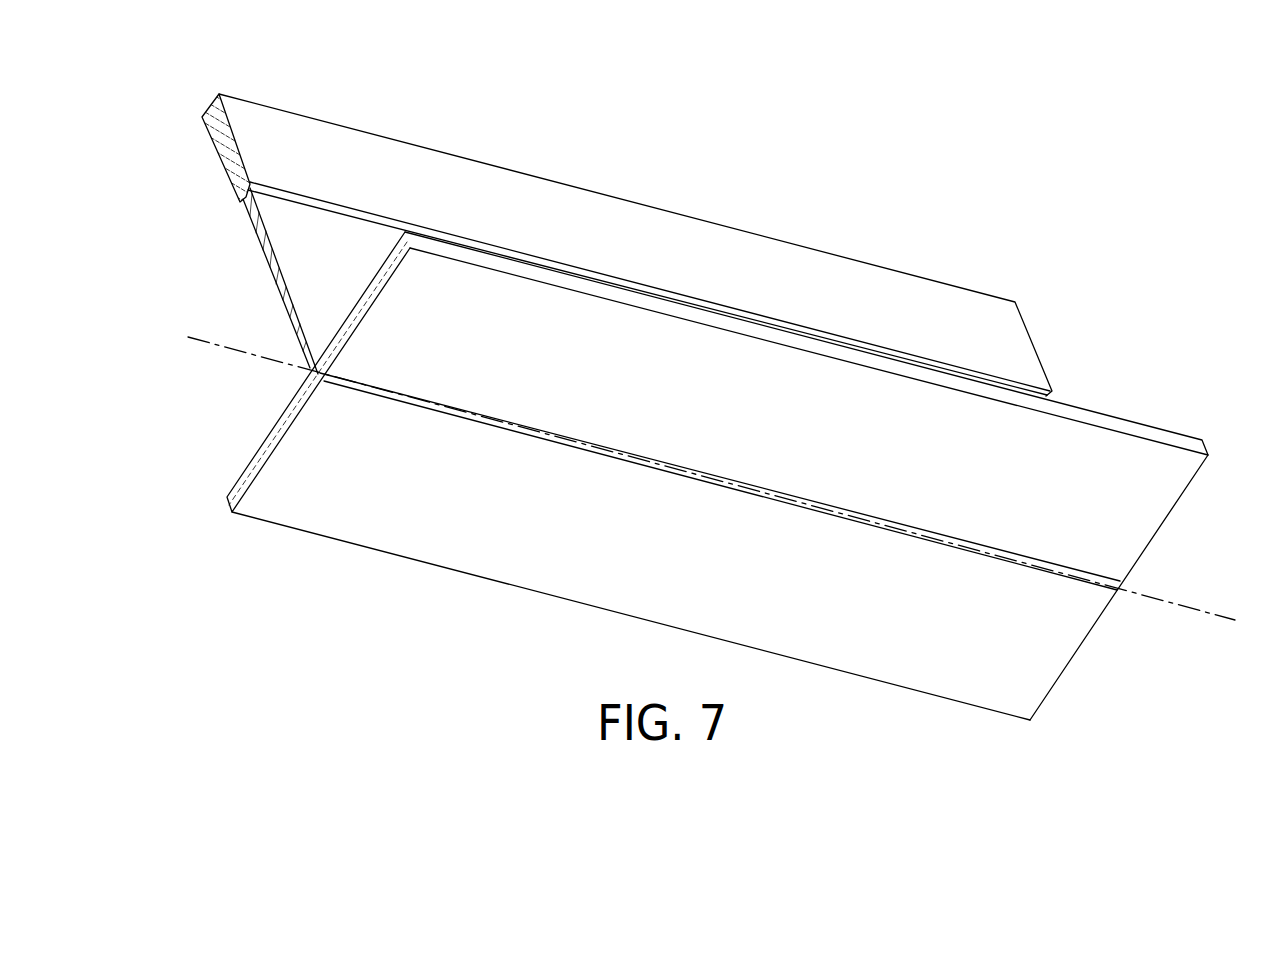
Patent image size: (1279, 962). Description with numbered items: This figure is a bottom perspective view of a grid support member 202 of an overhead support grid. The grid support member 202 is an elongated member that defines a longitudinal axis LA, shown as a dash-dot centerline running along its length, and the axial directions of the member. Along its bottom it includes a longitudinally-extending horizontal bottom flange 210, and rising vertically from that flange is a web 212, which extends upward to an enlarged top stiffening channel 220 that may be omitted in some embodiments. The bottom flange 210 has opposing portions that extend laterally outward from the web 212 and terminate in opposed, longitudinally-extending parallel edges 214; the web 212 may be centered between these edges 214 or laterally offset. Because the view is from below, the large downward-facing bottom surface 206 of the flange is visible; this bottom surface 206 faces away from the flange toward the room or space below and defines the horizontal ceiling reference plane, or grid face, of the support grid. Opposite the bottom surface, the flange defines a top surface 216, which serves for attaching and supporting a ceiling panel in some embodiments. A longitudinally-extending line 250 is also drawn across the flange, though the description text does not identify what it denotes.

The grid support member 202 is at (125, 109).
The bottom surface 206 is at (384, 495).
The bottom flange 210 is at (1113, 404).
The web 212 is at (278, 287).
The edges 214 is at (622, 298).
The top surface 216 is at (249, 454).
The top stiffening channel 220 is at (861, 286).
The fold line 250 is at (726, 485).
The longitudinal axis LA is at (1226, 627).